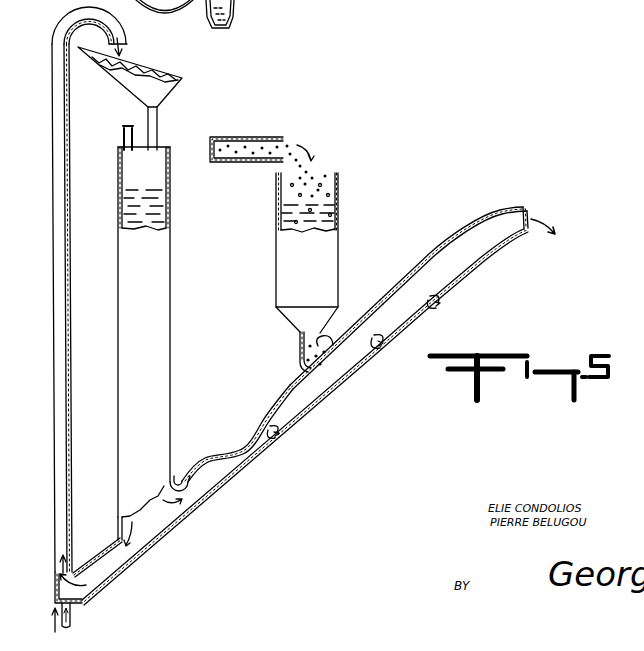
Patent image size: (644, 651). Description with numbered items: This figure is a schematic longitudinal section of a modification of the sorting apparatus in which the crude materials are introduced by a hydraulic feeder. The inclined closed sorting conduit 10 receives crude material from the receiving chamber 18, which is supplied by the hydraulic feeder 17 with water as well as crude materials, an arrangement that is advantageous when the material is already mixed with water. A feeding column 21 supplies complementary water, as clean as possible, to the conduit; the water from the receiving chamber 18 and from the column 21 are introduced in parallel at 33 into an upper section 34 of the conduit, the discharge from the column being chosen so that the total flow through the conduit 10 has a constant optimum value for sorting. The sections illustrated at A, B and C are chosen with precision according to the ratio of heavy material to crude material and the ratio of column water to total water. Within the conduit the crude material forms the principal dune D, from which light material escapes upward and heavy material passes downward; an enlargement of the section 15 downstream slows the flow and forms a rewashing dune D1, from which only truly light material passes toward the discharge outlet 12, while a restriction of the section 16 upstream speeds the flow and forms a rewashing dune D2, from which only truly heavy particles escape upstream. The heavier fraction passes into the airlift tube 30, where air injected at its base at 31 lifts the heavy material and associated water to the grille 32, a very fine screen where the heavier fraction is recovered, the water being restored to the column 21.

The sorting conduit 10 is at (378, 301).
The discharge outlet 12 is at (527, 206).
The enlargement of the section 15 is at (411, 263).
The restriction of the section 16 is at (250, 440).
The hydraulic feeder 17 is at (266, 128).
The receiving chamber 18 is at (340, 220).
The feeding column 21 is at (170, 290).
The airlift tube 30 is at (67, 290).
The air injection point 31 is at (72, 606).
The grille 32 is at (176, 60).
The parallel introduction point 33 is at (345, 350).
The upper section of the sorting conduit 34 is at (472, 268).
The section A is at (345, 347).
The section B is at (345, 362).
The section C is at (342, 352).
The principal dune D is at (386, 346).
The rewashing dune D1 is at (430, 312).
The rewashing dune D2 is at (283, 439).